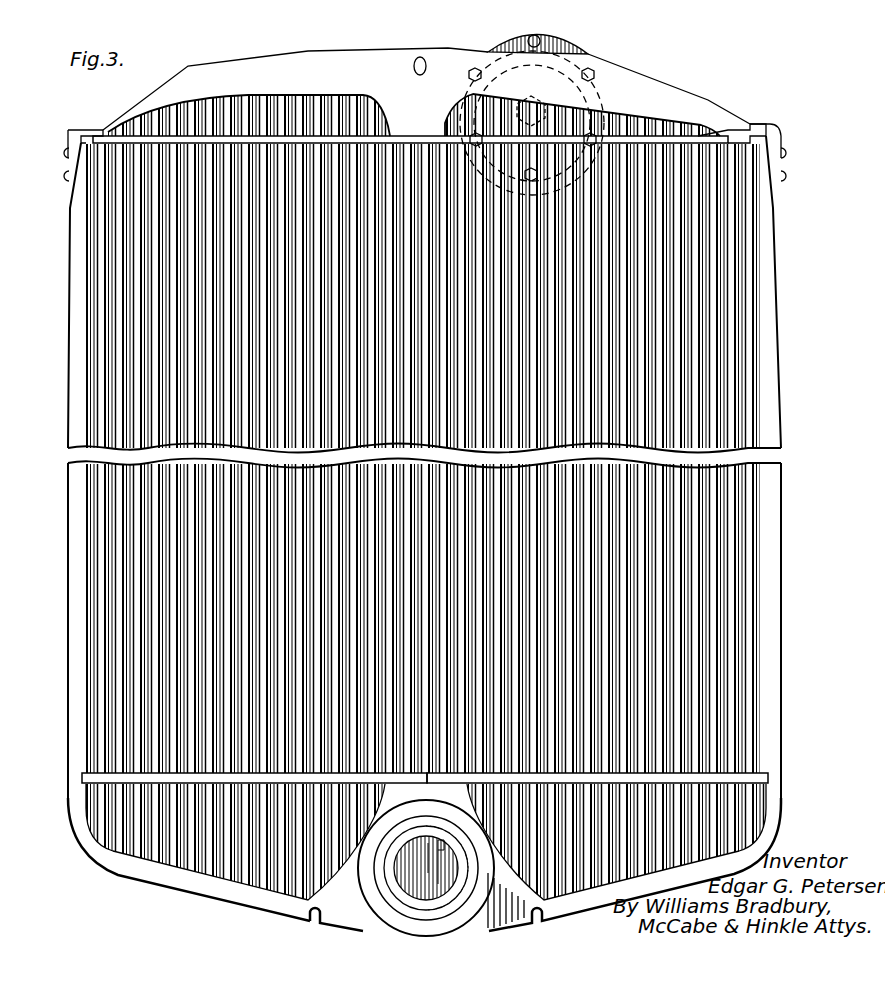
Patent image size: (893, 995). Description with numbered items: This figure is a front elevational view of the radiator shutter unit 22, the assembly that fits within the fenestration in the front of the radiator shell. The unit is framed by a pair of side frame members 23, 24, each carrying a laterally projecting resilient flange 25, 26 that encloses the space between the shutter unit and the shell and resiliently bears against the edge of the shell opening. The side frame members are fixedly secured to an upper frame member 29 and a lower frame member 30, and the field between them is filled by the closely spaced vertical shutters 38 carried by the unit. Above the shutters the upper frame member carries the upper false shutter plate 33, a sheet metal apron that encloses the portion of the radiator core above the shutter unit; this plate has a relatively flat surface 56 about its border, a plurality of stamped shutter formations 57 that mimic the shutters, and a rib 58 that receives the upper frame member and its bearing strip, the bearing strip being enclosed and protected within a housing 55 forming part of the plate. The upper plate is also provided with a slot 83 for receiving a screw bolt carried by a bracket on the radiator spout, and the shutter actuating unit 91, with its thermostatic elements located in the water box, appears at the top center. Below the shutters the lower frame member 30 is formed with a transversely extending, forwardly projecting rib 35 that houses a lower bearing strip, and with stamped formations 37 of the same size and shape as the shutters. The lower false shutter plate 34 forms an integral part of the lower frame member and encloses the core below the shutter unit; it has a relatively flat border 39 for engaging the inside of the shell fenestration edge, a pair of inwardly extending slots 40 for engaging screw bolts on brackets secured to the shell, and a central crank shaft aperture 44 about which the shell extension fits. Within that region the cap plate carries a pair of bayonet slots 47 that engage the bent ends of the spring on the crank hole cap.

The radiator shutter unit 22 is at (333, 182).
The side frame member 23 is at (755, 250).
The side frame member 24 is at (69, 303).
The resilient flange 25 is at (770, 300).
The resilient flange 26 is at (62, 365).
The upper frame member 29 is at (736, 118).
The lower frame member 30 is at (762, 770).
The upper false shutter plate 33 is at (665, 86).
The lower false shutter plate 34 is at (730, 810).
The rib 35 is at (78, 770).
The stamped formations 37 is at (120, 812).
The shutters 38 is at (113, 621).
The flat border 39 is at (130, 868).
The slots 40 is at (292, 908).
The crank shaft aperture 44 is at (410, 887).
The bayonet slots 47 is at (426, 868).
The housing 55 is at (397, 127).
The flat surface 56 is at (633, 63).
The stamped shutter formations 57 is at (607, 96).
The rib 58 is at (696, 126).
The slot 83 is at (408, 52).
The shutter actuating unit 91 is at (500, 2).